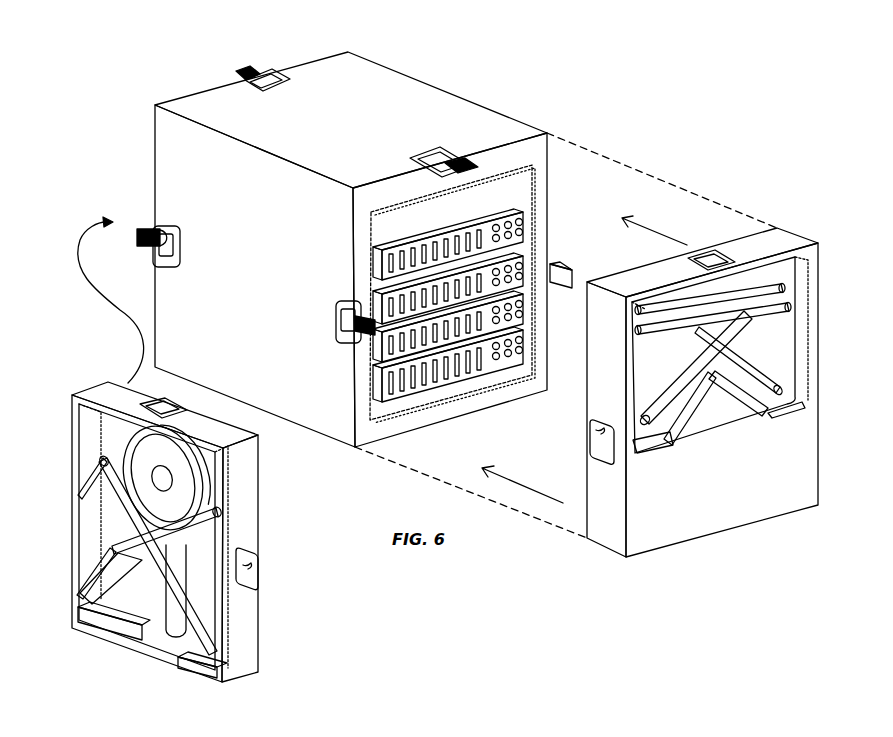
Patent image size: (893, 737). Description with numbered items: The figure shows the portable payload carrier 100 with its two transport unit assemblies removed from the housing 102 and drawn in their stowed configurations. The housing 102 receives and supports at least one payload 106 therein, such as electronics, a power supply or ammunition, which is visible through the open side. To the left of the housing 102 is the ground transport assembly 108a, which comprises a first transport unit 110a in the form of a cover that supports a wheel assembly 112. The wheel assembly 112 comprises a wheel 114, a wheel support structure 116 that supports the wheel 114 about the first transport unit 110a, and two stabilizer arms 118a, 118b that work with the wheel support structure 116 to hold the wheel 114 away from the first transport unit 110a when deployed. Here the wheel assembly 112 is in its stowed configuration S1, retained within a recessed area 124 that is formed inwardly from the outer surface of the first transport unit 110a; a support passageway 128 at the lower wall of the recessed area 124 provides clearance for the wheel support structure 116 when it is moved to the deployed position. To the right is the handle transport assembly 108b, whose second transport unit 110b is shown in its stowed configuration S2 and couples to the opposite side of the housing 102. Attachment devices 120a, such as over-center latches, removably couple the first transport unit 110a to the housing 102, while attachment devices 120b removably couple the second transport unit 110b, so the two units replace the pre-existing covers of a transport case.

The portable payload carrier 100 is at (163, 42).
The housing 102 is at (440, 100).
The payload 106 is at (519, 268).
The ground transport assembly 108a is at (89, 381).
The handle transport assembly 108b is at (795, 212).
The first transport unit 110a is at (243, 505).
The second transport unit 110b is at (768, 497).
The wheel assembly 112 is at (122, 430).
The wheel 114 is at (176, 470).
The wheel support structure 116 is at (177, 623).
The stabilizer arm 118a is at (115, 512).
The stabilizer arm 118b is at (128, 583).
The attachment devices or mechanisms 120a is at (249, 70).
The attachment mechanisms or devices 120b is at (445, 150).
The recessed area 124 is at (126, 606).
The support passageway 128 is at (160, 652).
The stowed configuration S1 is at (91, 340).
The stowed configuration S2 is at (742, 191).